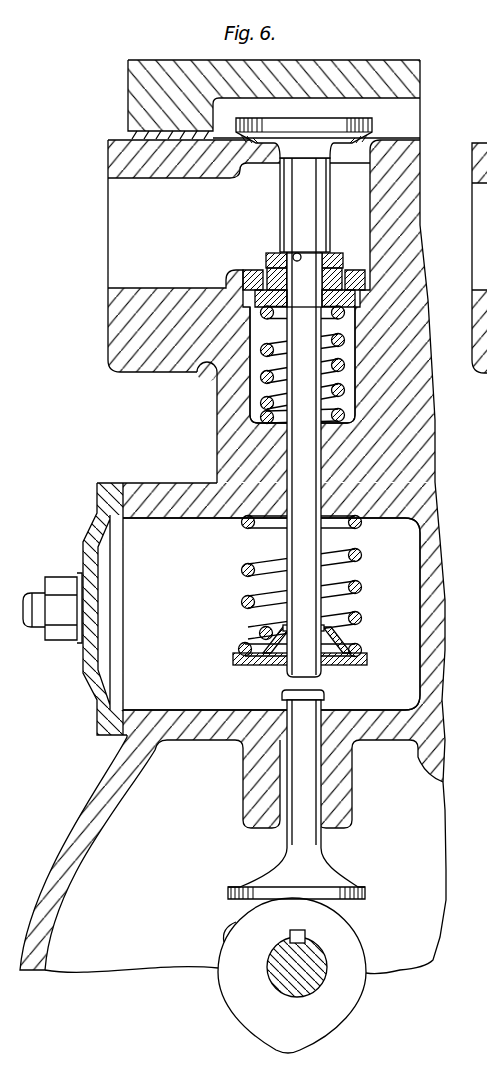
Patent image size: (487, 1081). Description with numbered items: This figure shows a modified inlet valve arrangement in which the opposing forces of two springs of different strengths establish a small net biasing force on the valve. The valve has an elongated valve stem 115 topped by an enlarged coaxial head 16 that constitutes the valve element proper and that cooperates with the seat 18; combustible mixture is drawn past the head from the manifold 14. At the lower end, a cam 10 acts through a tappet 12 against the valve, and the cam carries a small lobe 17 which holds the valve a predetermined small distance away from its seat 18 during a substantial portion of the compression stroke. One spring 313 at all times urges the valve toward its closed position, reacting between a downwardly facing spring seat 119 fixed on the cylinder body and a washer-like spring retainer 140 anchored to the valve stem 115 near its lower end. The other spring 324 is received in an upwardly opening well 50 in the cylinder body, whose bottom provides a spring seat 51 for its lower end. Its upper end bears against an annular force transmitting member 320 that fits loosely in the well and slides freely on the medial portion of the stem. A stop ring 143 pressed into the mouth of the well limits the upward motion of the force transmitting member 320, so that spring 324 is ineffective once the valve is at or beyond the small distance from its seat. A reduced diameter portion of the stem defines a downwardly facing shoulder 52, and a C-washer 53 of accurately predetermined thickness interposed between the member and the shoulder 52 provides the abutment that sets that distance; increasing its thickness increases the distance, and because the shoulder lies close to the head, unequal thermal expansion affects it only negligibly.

The cam 10 is at (255, 1015).
The tappet 12 is at (296, 840).
The manifold 14 is at (130, 178).
The head 16 is at (304, 128).
The lobe 17 is at (230, 934).
The seat 18 is at (374, 144).
The well 50 is at (354, 318).
The spring seat 51 is at (250, 412).
The shoulder 52 is at (297, 253).
The C-washer 53 is at (262, 268).
The valve stem 115 is at (300, 447).
The spring seat 119 is at (248, 518).
The spring retainer 140 is at (242, 664).
The stop ring 143 is at (355, 267).
The spring 313 is at (240, 570).
The force transmitting member 320 is at (357, 300).
The spring 324 is at (216, 377).